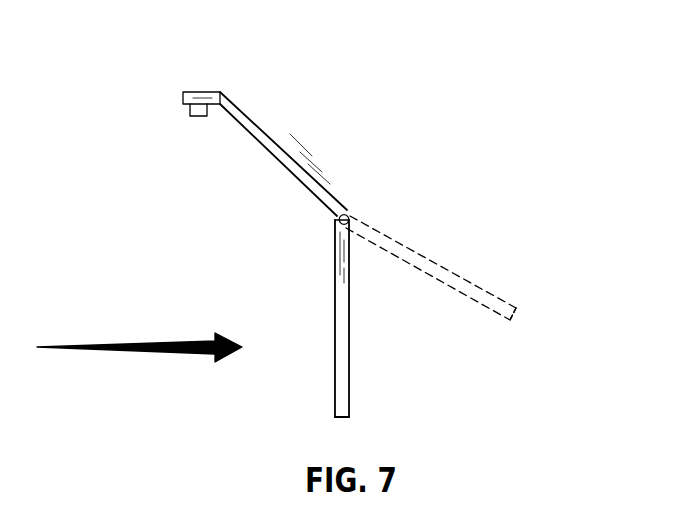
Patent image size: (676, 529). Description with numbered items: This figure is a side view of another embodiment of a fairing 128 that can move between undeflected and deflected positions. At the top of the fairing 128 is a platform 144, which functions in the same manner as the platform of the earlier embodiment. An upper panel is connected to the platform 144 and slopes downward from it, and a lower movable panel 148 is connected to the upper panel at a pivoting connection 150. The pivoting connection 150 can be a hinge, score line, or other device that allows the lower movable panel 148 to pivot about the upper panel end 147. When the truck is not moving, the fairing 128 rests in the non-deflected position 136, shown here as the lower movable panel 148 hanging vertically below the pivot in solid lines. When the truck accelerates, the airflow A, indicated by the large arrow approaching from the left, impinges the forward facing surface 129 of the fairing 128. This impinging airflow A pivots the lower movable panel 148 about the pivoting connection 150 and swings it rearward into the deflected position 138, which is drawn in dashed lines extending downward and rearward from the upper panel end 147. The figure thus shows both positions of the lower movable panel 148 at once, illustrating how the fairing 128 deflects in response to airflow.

The airflow A is at (185, 357).
The fairing 128 is at (292, 130).
The forward facing surface 129 is at (335, 310).
The non-deflected position 136 is at (360, 392).
The deflected position 138 is at (490, 311).
The platform 144 is at (197, 92).
The upper panel end 147 is at (336, 223).
The lower movable panel 148 is at (433, 252).
The pivoting connection 150 is at (352, 217).